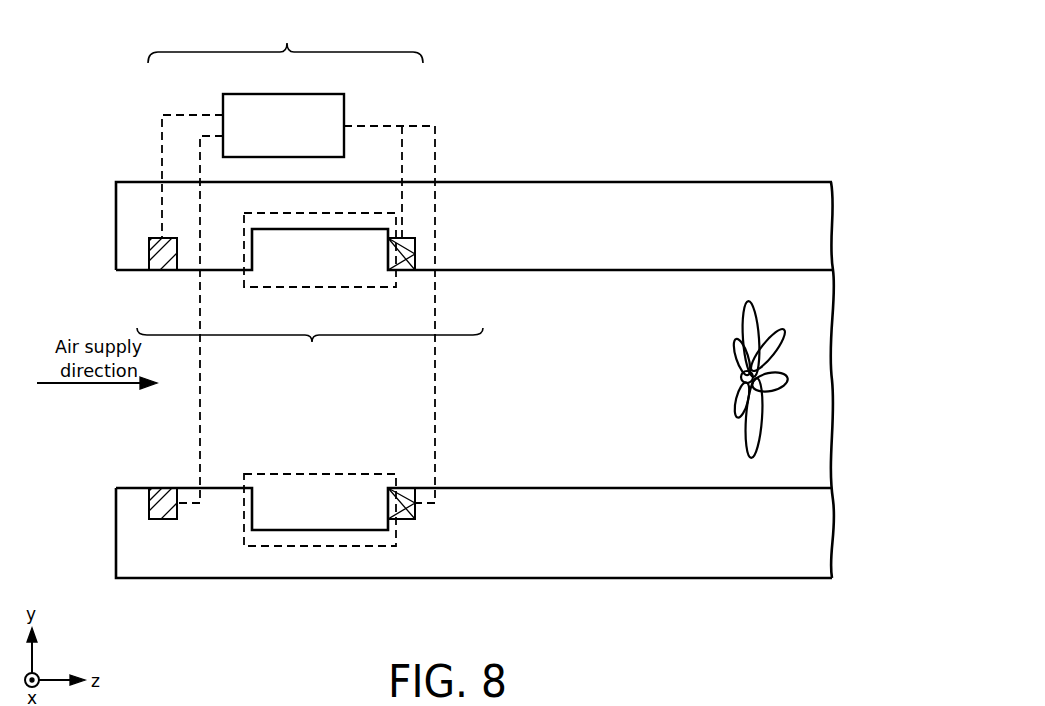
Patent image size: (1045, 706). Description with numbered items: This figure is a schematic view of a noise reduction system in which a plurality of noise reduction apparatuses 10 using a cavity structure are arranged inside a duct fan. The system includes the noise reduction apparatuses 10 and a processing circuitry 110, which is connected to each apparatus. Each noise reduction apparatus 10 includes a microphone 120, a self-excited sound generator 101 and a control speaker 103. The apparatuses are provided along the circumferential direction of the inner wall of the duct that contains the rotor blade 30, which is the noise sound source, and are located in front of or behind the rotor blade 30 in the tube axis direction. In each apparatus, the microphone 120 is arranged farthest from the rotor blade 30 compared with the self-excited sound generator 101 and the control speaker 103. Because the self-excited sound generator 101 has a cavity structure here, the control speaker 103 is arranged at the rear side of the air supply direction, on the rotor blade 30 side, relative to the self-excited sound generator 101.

The noise reduction apparatus 10 is at (310, 194).
The processing circuitry 110 is at (309, 94).
The self-excited sound generator 101 is at (353, 213).
The control speaker 103 is at (415, 252).
The microphone 120 is at (162, 272).
The rotor blade 30 is at (758, 318).